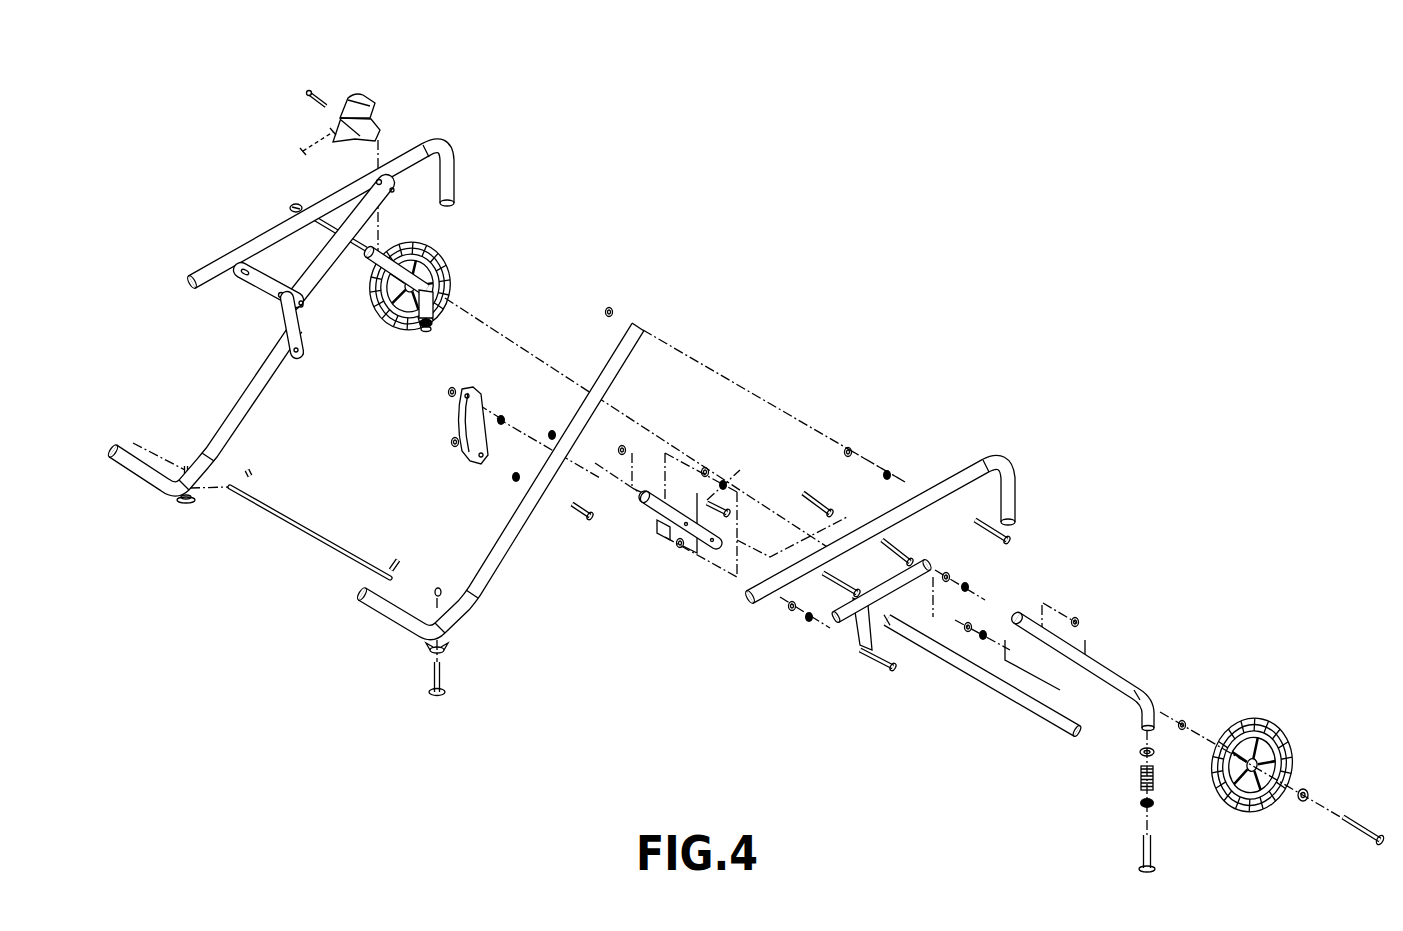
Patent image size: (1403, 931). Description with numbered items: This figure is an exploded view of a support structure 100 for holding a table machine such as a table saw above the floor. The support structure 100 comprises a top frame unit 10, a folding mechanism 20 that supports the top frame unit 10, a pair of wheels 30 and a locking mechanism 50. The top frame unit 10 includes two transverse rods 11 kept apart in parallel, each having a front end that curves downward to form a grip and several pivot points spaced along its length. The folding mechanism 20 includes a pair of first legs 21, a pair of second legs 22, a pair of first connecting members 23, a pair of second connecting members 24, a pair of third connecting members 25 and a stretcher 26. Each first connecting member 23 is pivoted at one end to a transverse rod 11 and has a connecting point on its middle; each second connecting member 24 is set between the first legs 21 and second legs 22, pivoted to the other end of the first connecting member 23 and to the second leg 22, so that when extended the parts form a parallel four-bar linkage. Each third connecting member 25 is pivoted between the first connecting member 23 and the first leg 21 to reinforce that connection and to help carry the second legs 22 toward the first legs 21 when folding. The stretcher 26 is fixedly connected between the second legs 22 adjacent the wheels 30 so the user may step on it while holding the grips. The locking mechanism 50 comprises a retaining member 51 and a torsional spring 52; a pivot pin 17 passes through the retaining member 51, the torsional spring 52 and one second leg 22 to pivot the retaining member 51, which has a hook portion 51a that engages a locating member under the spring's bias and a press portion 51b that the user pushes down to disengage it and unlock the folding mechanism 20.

The support structure 100 is at (728, 447).
The top frame unit 10 is at (197, 267).
The transverse rod 11 is at (262, 247).
The pivot pin 17 is at (330, 103).
The folding mechanism 20 is at (358, 483).
The first leg 21 is at (235, 410).
The second leg 22 is at (373, 253).
The first connecting member 23 is at (260, 283).
The second connecting member 24 is at (305, 292).
The third connecting member 25 is at (287, 320).
The stretcher 26 is at (993, 687).
The wheel 30 is at (447, 277).
The locking mechanism 50 is at (357, 88).
The retaining member 51 is at (422, 101).
The hook portion 51a is at (358, 128).
The press portion 51b is at (360, 106).
The torsional spring 52 is at (297, 152).